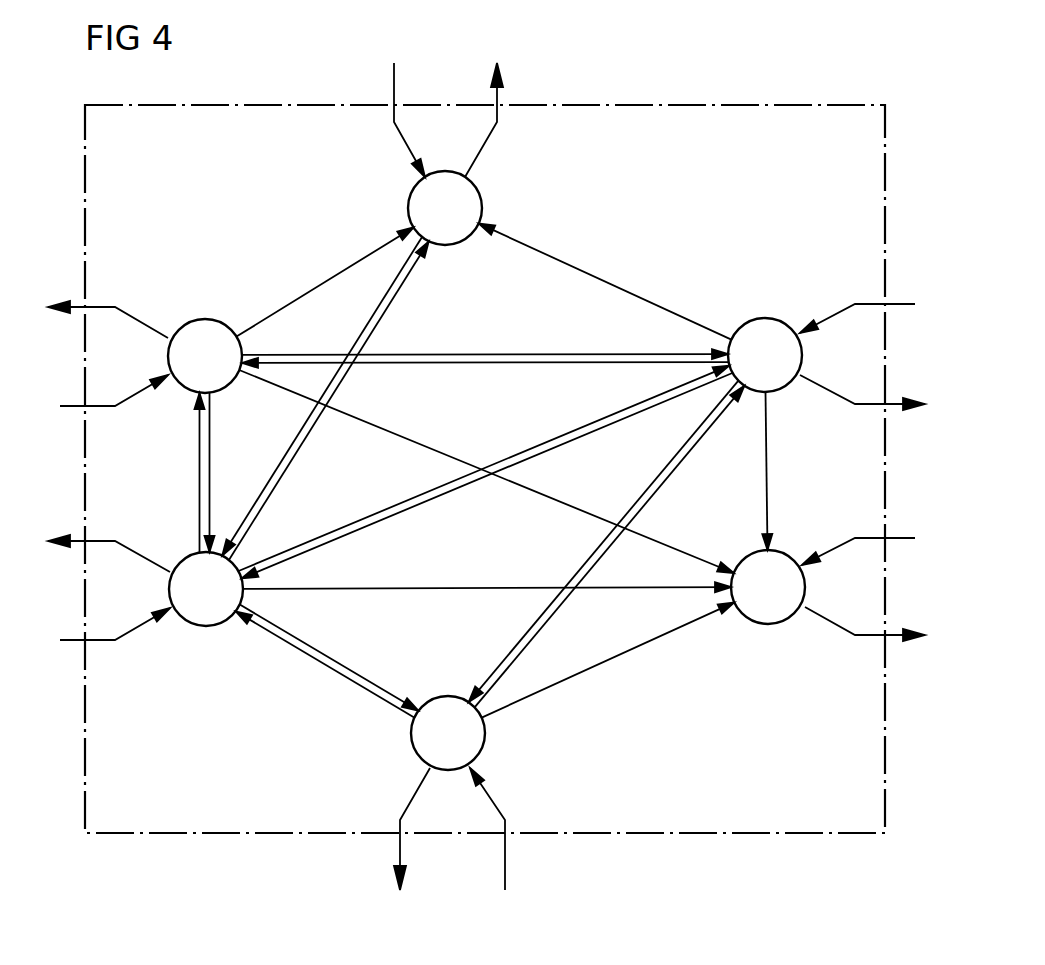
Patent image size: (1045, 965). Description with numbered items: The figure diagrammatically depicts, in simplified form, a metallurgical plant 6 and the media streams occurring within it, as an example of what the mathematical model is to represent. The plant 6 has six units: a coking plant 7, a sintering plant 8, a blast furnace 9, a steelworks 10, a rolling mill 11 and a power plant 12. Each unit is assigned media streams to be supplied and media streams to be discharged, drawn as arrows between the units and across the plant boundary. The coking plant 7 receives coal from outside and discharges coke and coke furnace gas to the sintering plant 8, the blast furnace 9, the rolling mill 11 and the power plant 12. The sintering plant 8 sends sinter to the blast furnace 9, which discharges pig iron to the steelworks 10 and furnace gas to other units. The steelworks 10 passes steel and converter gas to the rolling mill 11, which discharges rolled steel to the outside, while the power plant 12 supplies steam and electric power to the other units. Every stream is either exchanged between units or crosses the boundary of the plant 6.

The metallurgical plant 6 is at (640, 104).
The coking plant 7 is at (200, 336).
The sintering plant 8 is at (445, 185).
The blast furnace 9 is at (203, 614).
The steelworks 10 is at (448, 758).
The rolling mill 11 is at (768, 612).
The power plant 12 is at (765, 333).